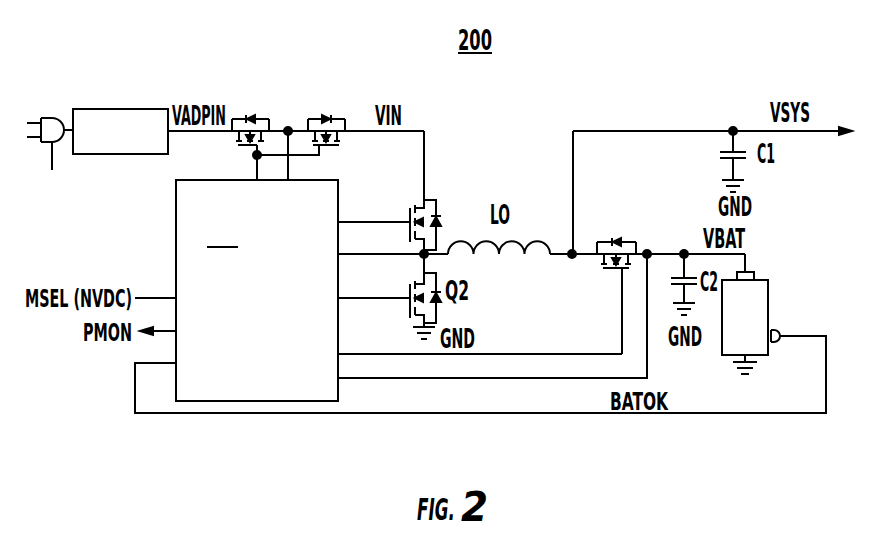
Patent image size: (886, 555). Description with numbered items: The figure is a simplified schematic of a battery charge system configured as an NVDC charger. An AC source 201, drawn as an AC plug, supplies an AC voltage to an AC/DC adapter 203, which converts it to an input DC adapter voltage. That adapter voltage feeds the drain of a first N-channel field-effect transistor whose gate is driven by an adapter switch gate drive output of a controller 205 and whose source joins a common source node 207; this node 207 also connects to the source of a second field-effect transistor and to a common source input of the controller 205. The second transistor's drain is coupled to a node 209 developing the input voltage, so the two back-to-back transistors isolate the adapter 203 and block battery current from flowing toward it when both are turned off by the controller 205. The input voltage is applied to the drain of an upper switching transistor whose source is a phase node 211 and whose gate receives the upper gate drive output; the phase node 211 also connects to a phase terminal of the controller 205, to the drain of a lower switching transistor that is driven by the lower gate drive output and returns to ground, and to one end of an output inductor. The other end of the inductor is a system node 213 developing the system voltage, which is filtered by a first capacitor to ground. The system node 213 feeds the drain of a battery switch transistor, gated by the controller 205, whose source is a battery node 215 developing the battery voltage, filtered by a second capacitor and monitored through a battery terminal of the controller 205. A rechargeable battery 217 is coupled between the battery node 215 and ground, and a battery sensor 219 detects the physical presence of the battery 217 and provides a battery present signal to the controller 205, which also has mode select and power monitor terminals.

The AC source 201 is at (52, 170).
The AC/DC adapter 203 is at (122, 108).
The controller 205 is at (257, 290).
The common source node 207 is at (288, 131).
The node developing input voltage VIN 209 is at (427, 165).
The phase node 211 is at (422, 257).
The system node 213 is at (573, 163).
The battery node 215 is at (685, 250).
The rechargeable battery 217 is at (768, 305).
The battery sensor 219 is at (780, 332).